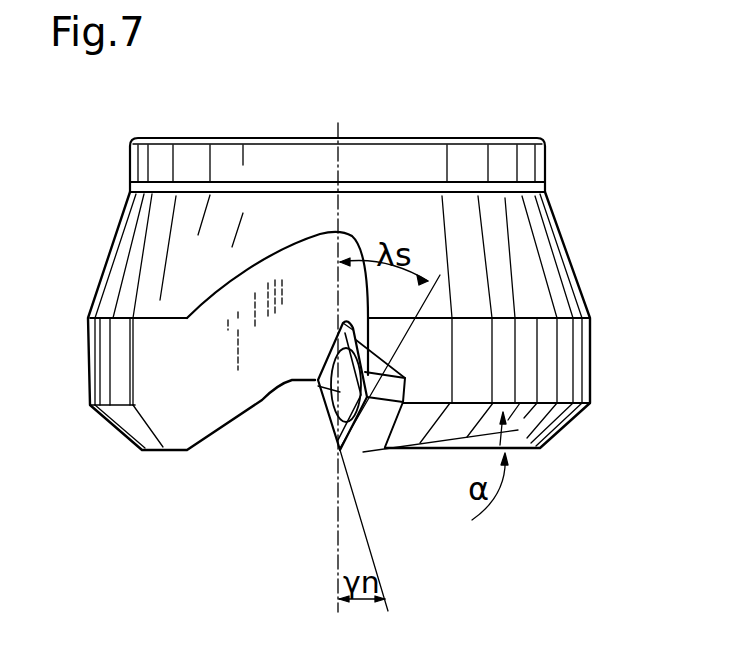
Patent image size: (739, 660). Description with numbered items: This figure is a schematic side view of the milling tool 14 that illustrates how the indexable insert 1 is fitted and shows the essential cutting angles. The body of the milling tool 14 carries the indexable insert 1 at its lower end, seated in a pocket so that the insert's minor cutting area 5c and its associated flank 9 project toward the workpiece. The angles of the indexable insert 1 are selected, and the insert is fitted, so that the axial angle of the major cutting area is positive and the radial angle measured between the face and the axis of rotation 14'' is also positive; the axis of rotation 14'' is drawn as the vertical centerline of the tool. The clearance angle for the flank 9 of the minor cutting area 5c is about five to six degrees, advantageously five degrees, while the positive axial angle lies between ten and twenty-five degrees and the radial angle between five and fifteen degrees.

The axis of rotation 14'' is at (337, 117).
The cutter body 14 is at (513, 318).
The indexable insert 1 is at (306, 433).
The cutting insert 5c is at (338, 450).
The flank 9 is at (365, 447).